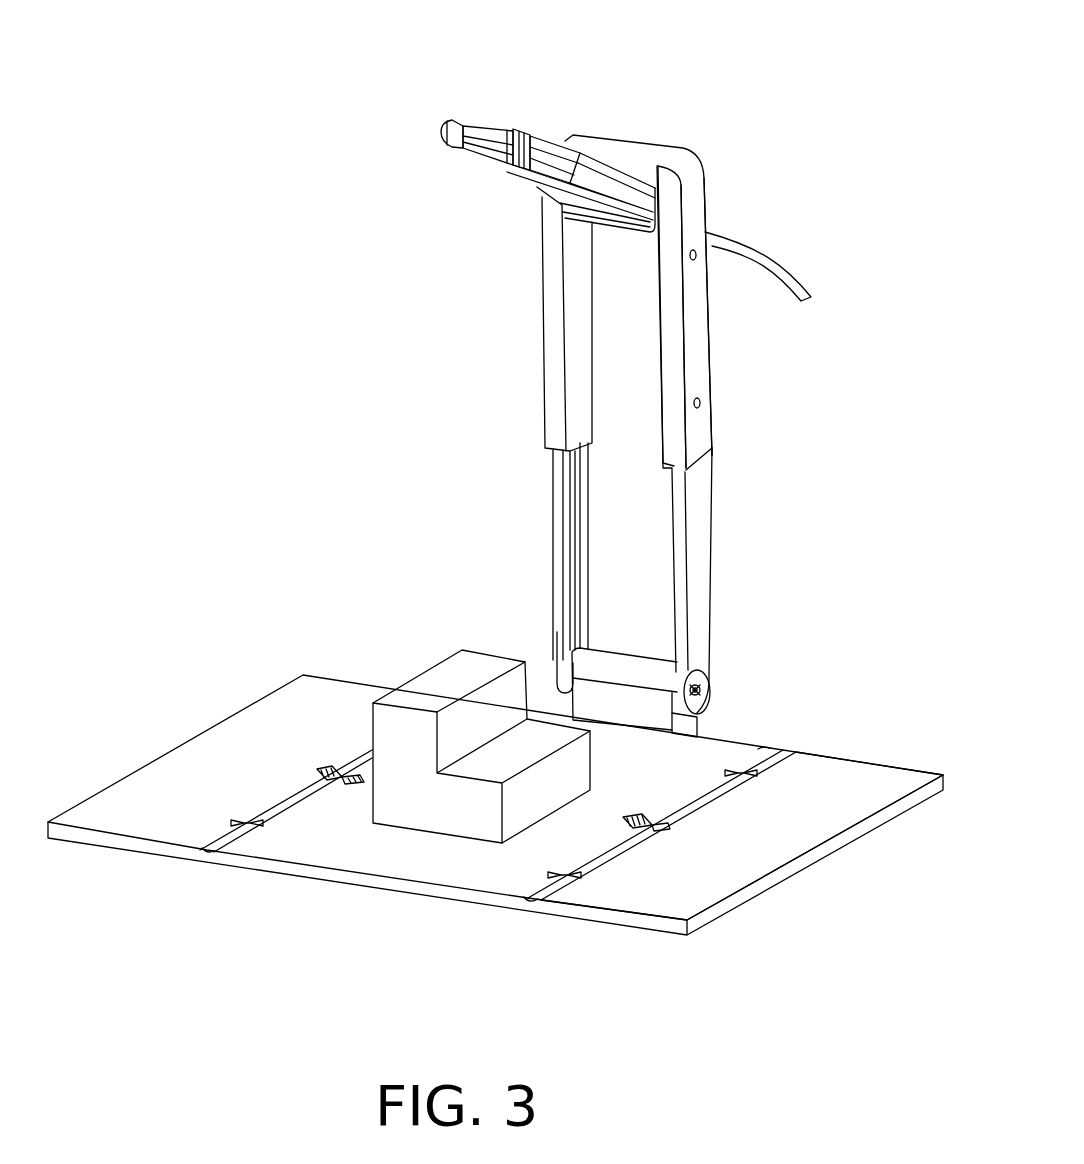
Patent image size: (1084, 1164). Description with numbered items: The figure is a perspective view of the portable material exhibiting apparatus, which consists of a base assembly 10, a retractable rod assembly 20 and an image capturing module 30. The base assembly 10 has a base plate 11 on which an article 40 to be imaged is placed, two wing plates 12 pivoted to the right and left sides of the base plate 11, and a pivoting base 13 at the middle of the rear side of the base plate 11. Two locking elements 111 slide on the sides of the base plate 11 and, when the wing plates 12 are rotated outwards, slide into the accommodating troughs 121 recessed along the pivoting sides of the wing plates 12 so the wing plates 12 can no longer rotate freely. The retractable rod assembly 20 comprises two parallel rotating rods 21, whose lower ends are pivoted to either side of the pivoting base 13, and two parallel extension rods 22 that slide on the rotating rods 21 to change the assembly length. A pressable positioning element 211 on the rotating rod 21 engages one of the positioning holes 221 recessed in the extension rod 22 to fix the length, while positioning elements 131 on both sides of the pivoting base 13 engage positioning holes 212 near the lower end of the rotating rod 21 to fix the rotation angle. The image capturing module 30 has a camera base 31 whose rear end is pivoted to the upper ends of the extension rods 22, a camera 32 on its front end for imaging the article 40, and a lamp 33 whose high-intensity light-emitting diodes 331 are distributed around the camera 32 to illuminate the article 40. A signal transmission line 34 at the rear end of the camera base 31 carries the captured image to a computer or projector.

The base assembly 10 is at (495, 834).
The base plate 11 is at (768, 750).
The wing plate 12 is at (790, 845).
The locking element 111 is at (543, 878).
The accommodating trough 121 is at (668, 828).
The pivoting base 13 is at (663, 665).
The positioning element 131 is at (708, 705).
The retractable rod assembly 20 is at (675, 424).
The rotating rod 21 is at (697, 548).
The positioning element 211 is at (702, 404).
The positioning hole 212 is at (707, 686).
The extension rod 22 is at (703, 333).
The positioning hole 221 is at (698, 254).
The image capturing module 30 is at (491, 166).
The camera base 31 is at (582, 198).
The camera 32 is at (487, 128).
The lamp 33 is at (438, 143).
The light-emitting diode 331 is at (463, 150).
The signal transmission line 34 is at (806, 288).
The article 40 is at (422, 665).